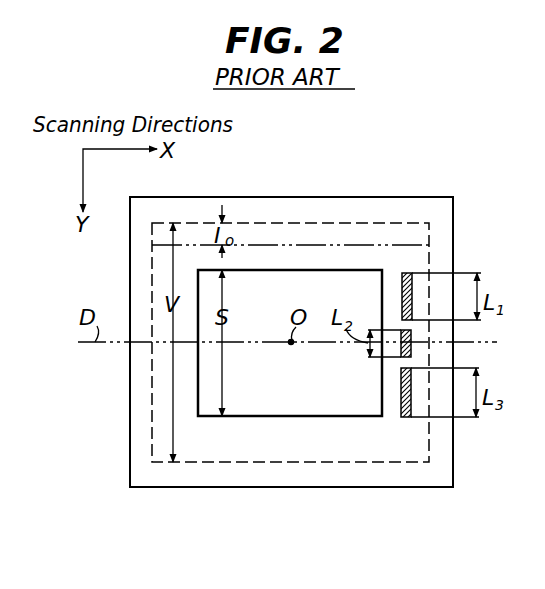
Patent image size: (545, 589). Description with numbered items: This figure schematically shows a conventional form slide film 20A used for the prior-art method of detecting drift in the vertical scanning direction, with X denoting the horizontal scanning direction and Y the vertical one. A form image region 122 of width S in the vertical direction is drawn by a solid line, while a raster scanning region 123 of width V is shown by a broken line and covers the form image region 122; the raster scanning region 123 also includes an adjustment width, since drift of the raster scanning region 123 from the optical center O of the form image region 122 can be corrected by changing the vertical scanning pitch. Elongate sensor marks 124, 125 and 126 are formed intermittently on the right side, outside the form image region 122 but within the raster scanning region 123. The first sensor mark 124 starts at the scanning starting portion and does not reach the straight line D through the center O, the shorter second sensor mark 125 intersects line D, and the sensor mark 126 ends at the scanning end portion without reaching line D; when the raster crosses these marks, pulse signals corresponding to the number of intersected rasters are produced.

The form slide film 20A is at (395, 173).
The form image region 122 is at (320, 405).
The raster scanning region 123 is at (227, 447).
The first sensor mark 124 is at (412, 290).
The second sensor mark 125 is at (411, 350).
The sensor mark 126 is at (406, 395).